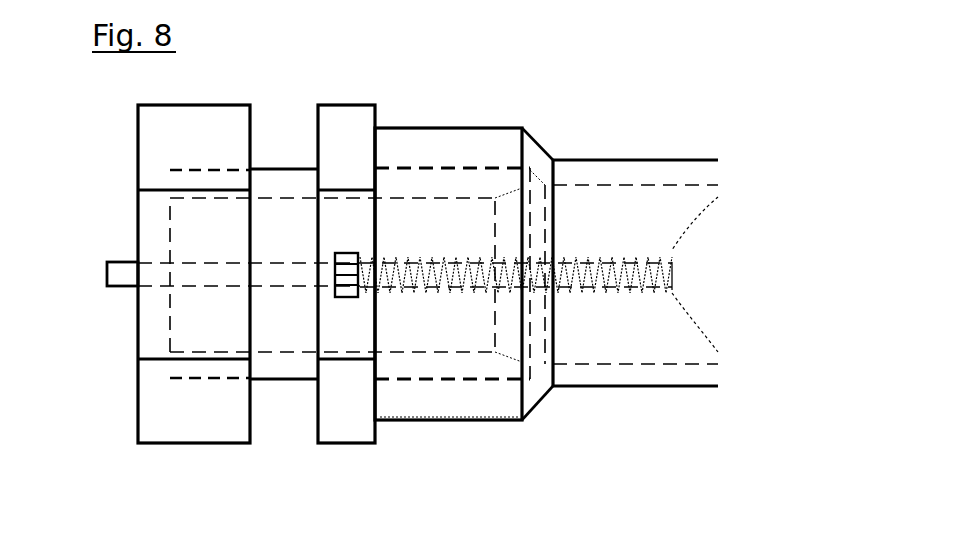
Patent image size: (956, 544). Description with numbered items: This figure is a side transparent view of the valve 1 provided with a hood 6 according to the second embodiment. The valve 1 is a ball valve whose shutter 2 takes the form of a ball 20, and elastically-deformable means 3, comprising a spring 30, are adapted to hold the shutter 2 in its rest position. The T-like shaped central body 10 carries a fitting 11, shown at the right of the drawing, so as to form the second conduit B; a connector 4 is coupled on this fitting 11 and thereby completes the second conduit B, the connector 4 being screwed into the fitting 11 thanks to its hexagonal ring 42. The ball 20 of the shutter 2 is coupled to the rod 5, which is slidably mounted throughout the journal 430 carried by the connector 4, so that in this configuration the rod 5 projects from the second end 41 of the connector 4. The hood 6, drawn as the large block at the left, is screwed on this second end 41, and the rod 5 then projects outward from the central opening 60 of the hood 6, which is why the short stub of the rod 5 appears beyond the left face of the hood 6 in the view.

The valve 1 is at (590, 46).
The shutter 2 is at (686, 345).
The elastically-deformable means 3 is at (474, 241).
The connector 4 is at (302, 160).
The rod 5 is at (120, 271).
The hood 6 is at (193, 451).
The central body 10 is at (631, 171).
The fitting 11 is at (422, 140).
The ball 20 is at (693, 233).
The spring 30 is at (607, 289).
The second end 41 is at (276, 180).
The hexagonal ring 42 is at (353, 120).
The central opening 60 is at (155, 295).
The journal 430 is at (345, 303).
The second conduit B is at (414, 454).